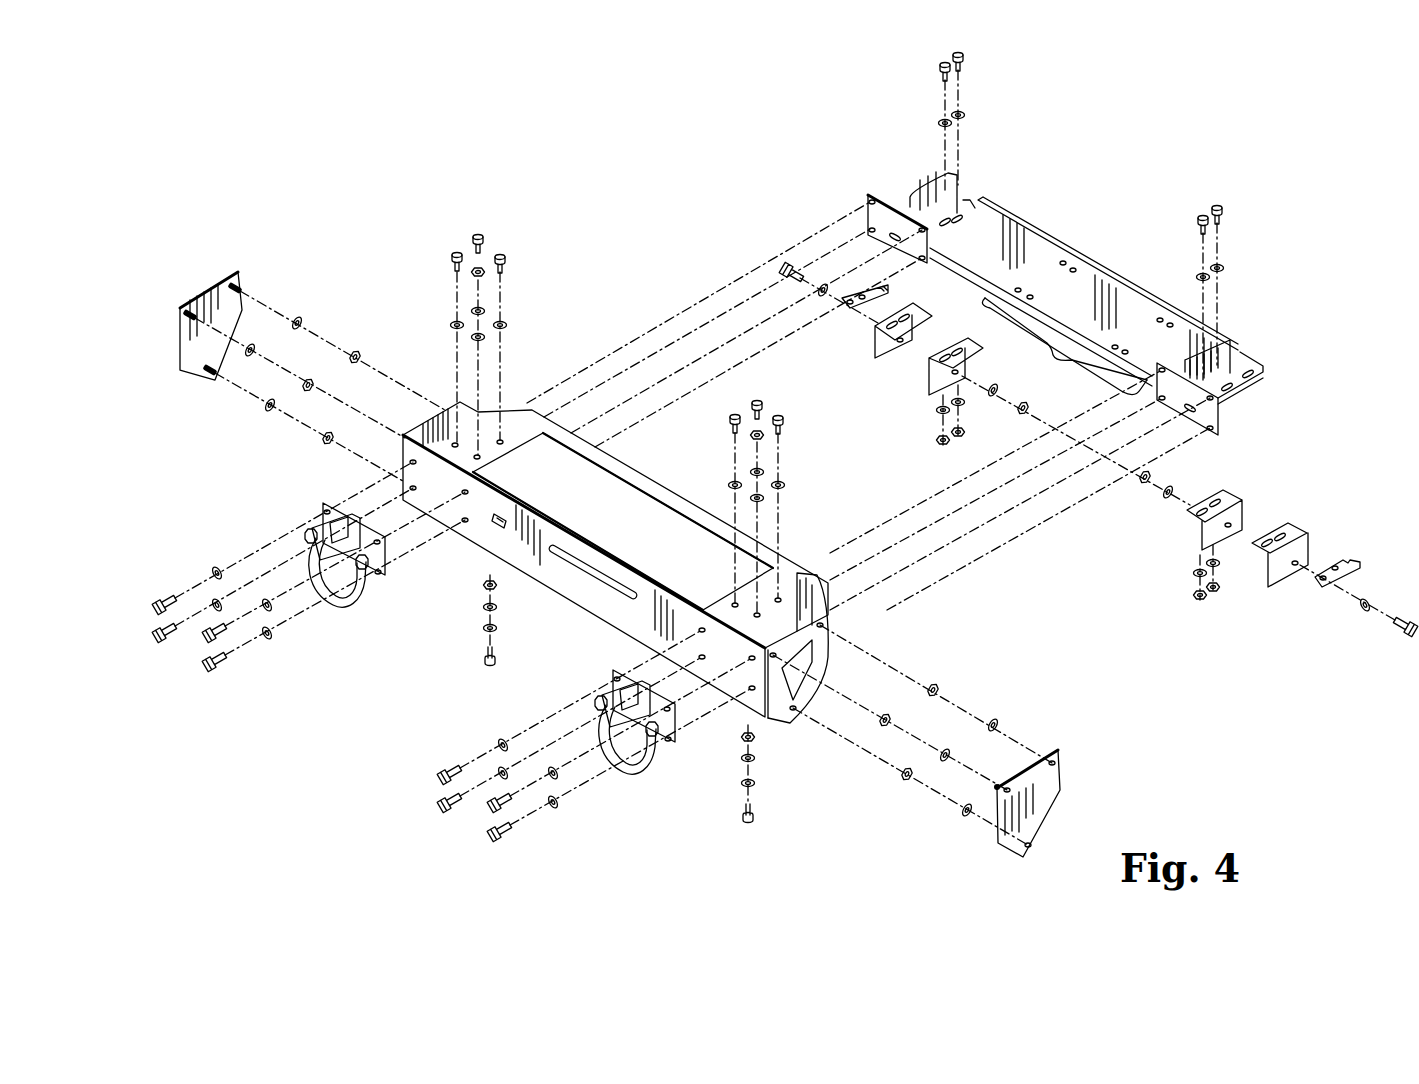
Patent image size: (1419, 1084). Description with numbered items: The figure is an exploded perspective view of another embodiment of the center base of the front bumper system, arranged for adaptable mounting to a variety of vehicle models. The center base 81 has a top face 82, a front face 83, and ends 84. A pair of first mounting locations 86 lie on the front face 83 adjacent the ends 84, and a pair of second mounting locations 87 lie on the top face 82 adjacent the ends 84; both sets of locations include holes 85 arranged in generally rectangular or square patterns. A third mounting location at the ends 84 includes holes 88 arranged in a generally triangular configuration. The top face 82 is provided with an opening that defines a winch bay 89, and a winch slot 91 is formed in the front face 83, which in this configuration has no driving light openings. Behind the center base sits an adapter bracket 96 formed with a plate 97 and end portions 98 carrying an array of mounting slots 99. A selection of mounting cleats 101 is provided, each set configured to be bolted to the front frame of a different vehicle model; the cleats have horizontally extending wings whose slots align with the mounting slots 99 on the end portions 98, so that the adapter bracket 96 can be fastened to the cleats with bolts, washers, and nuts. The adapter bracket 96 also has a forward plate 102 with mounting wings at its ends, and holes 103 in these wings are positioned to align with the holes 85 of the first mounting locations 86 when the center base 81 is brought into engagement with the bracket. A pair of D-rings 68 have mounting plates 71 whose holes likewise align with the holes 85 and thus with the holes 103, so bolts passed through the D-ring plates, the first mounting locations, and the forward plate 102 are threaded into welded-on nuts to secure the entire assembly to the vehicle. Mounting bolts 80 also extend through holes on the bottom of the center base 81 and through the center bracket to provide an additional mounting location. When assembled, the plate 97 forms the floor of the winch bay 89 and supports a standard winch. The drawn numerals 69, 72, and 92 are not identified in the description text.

The D-rings 68 is at (663, 753).
The D-ring mounting plate 69 is at (430, 571).
The mounting plates 71 is at (670, 708).
The D-ring 72 is at (390, 570).
The mounting bolts 80 is at (483, 647).
The center base 81 is at (537, 421).
The top face 82 is at (785, 580).
The front face 83 is at (637, 620).
The ends 84 is at (422, 424).
The holes 85 is at (500, 442).
The first mounting locations 86 is at (433, 486).
The second mounting locations 87 is at (478, 455).
The holes 88 is at (800, 650).
The winch bay 89 is at (628, 519).
The winch slot 91 is at (593, 573).
The side mounting bracket 92 is at (202, 304).
The adapter bracket 96 is at (1042, 218).
The plate 97 is at (1100, 300).
The end portions 98 is at (914, 194).
The mounting slots 99 is at (1253, 368).
The mounting cleats 101 is at (935, 378).
The forward plate 102 is at (1064, 346).
The holes 103 is at (922, 230).